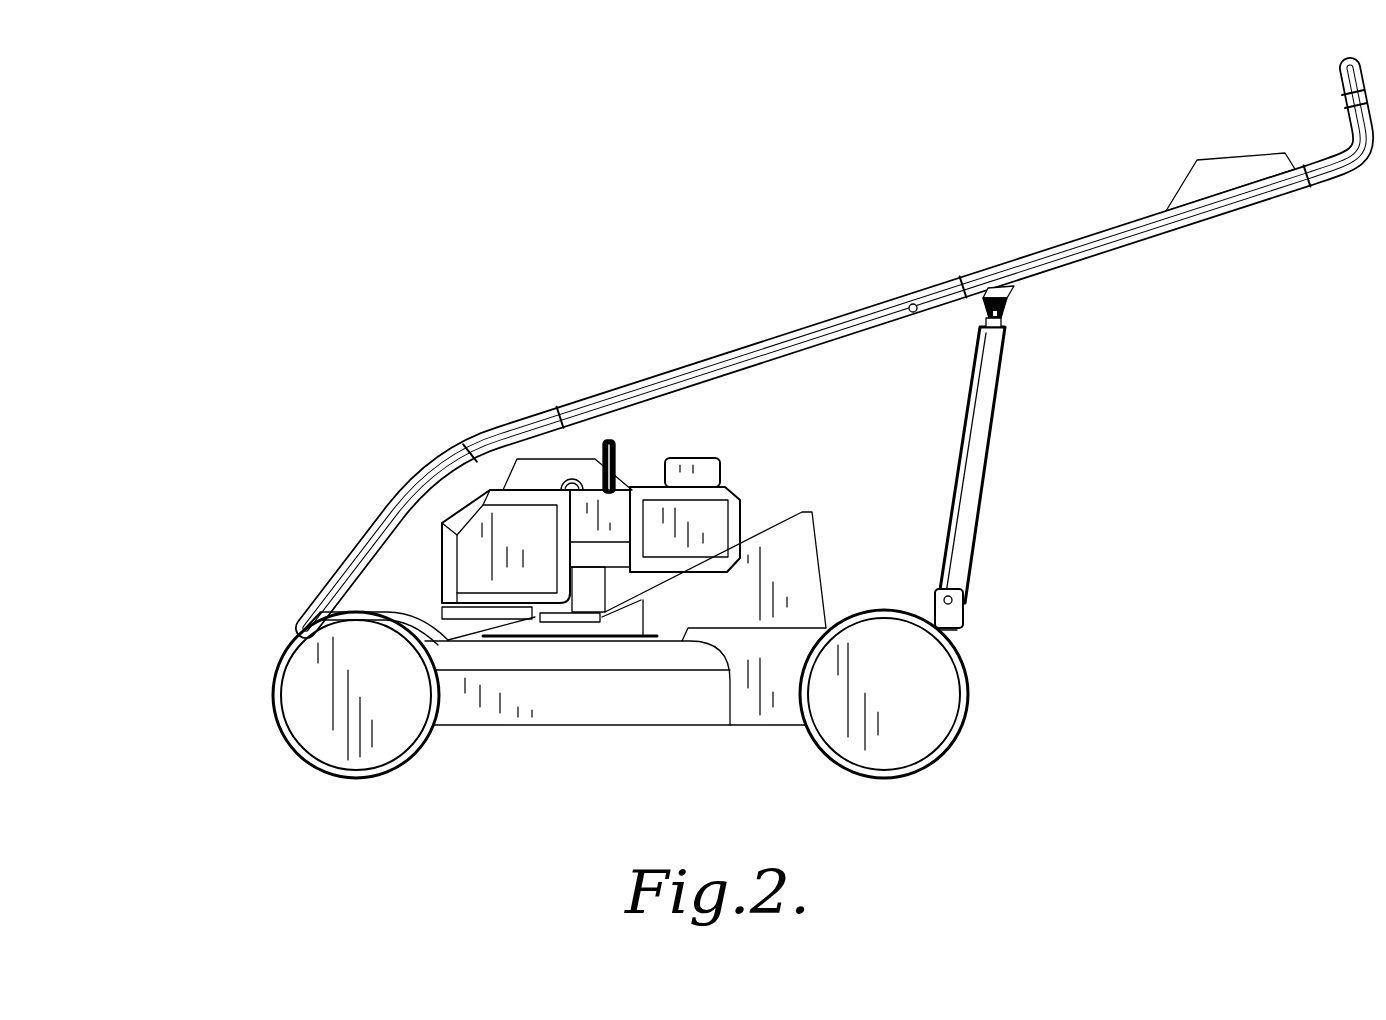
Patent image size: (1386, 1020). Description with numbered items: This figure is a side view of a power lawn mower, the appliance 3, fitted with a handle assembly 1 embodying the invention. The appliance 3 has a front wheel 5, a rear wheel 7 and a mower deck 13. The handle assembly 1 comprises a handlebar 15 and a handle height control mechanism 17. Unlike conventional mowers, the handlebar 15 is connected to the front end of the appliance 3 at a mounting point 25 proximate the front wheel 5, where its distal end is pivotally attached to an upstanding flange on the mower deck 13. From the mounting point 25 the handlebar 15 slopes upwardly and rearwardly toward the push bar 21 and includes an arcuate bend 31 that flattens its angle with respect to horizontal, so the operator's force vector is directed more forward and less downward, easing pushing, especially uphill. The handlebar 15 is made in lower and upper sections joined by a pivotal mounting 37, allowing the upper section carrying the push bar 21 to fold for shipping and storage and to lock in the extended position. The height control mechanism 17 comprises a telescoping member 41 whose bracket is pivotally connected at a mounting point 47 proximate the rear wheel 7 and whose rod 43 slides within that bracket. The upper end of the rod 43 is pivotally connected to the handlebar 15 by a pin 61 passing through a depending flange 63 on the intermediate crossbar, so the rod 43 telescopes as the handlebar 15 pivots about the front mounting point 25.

The handle assembly 1 is at (763, 436).
The appliance 3 is at (828, 506).
The front wheel 5 is at (418, 752).
The rear wheel 7 is at (963, 734).
The mower deck 13 is at (560, 727).
The handlebar 15 is at (836, 345).
The handle height control mechanism 17 is at (1033, 458).
The push bar 21 is at (1333, 72).
The mounting point 25 is at (288, 617).
The arcuate bend 31 is at (421, 478).
The pivotal mounting 37 is at (913, 303).
The telescoping member 41 is at (987, 492).
The rod 43 is at (1001, 353).
The mounting point 47 is at (988, 603).
The pin 61 is at (984, 306).
The depending flange 63 is at (1012, 299).